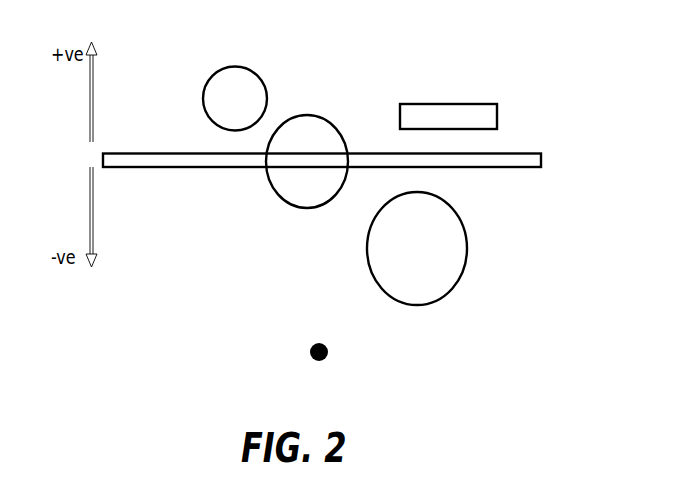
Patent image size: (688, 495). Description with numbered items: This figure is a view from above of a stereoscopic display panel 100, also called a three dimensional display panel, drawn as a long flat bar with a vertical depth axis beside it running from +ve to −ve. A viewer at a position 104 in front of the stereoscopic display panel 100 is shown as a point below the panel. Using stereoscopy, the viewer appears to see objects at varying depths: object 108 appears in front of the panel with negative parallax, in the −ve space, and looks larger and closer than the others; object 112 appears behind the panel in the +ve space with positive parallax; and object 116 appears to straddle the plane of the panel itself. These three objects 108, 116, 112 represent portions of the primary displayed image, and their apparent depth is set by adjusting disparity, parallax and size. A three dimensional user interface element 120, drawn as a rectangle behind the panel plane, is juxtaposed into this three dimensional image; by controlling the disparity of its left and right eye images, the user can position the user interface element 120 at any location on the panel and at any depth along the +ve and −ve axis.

The stereoscopic display panel 100 is at (541, 166).
The position of a viewer 104 is at (328, 350).
The object 108 is at (457, 280).
The object 112 is at (243, 67).
The object 116 is at (307, 208).
The 3D UI element 120 is at (448, 104).